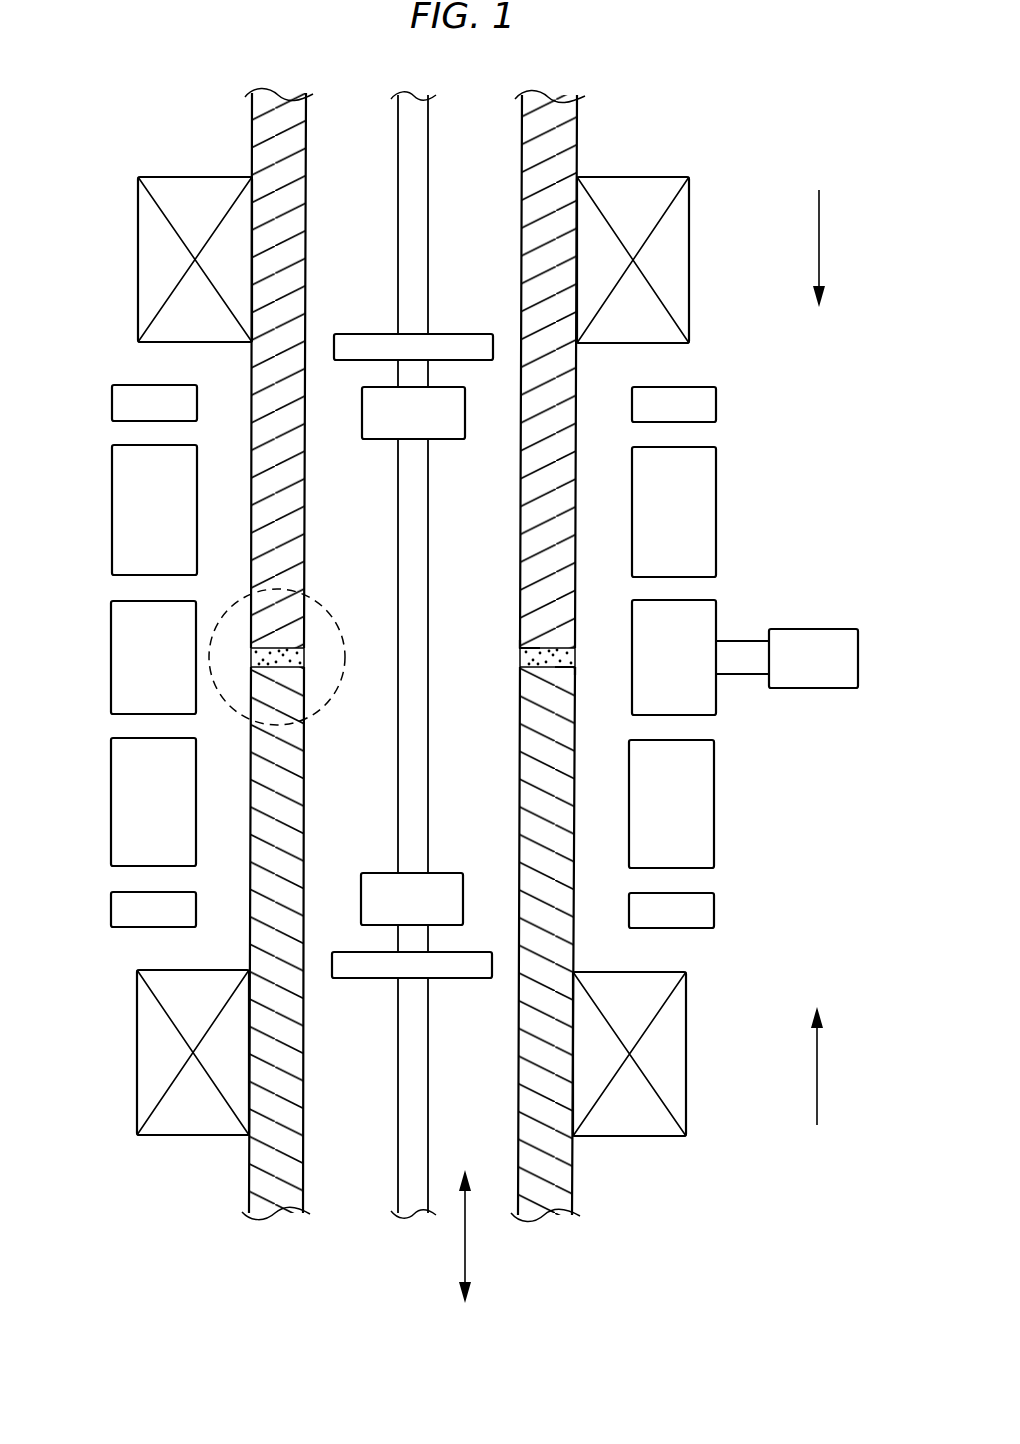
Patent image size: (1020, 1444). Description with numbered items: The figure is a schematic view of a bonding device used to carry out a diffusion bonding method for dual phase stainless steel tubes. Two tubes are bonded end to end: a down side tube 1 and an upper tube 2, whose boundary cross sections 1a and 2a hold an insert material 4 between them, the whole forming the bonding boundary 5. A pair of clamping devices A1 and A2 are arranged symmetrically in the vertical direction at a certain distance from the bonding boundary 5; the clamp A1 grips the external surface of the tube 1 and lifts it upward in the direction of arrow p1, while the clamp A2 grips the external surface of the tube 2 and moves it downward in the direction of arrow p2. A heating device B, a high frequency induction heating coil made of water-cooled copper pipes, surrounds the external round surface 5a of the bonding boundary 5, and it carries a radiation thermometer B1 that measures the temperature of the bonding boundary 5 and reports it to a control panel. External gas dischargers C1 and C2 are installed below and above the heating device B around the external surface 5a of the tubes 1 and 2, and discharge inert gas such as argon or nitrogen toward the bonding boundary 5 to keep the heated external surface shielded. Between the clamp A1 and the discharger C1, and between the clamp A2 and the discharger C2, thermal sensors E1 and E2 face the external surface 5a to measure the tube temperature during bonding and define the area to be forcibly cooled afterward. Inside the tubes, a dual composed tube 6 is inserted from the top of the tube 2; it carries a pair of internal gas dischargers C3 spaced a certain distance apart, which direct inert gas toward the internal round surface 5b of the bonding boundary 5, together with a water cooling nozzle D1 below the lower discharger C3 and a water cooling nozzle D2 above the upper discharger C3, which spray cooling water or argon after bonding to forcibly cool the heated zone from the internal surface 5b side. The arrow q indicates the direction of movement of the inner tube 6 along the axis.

The down side tube 1 is at (519, 1103).
The boundary cross section of tube 1 1a is at (575, 668).
The tube 2 is at (521, 155).
The boundary cross section of tube 2 2a is at (520, 647).
The insert material 4 is at (520, 658).
The bonding boundary 5 is at (334, 616).
The external round surface 5a is at (305, 829).
The internal round surface 5b is at (307, 196).
The dual composed tube 6 is at (397, 1097).
The clamping device A1 is at (137, 1067).
The clamping device A2 is at (138, 243).
The heating device B is at (111, 657).
The radiation thermometer B1 is at (816, 688).
The external gas discharger C1 is at (111, 808).
The external gas discharger C2 is at (112, 502).
The internal gas discharger C3 is at (452, 432).
The water cooling nozzle D1 is at (466, 978).
The water cooling nozzle D2 is at (466, 344).
The thermal sensor E1 is at (111, 910).
The thermal sensor E2 is at (112, 400).
The arrow direction p1 is at (836, 1066).
The arrow direction p2 is at (839, 248).
The shaft movement direction q is at (476, 1236).